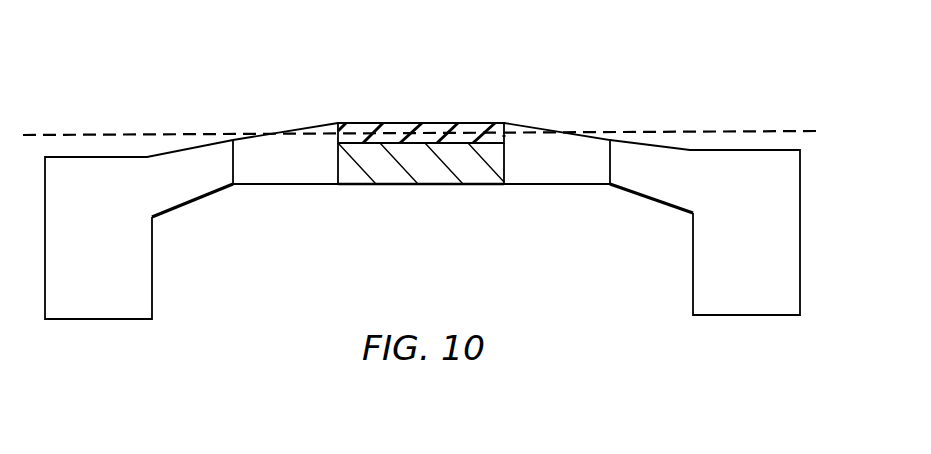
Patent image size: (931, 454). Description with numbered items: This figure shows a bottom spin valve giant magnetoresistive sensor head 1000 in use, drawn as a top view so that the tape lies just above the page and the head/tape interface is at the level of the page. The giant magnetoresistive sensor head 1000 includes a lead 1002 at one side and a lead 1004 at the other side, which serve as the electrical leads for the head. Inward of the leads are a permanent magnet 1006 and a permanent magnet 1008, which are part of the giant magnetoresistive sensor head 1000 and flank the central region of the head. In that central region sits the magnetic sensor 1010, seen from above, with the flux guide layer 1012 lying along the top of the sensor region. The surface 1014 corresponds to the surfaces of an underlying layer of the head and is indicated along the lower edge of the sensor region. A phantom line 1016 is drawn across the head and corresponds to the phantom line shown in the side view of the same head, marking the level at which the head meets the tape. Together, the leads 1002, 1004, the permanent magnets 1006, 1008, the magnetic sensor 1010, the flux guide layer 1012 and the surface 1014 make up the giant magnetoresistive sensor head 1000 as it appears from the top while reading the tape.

The giant magnetoresistive sensor head 1000 is at (162, 104).
The lead 1002 is at (98, 320).
The lead 1004 is at (748, 316).
The permanent magnet 1006 is at (285, 186).
The permanent magnet 1008 is at (557, 185).
The magnetic sensor 1010 is at (440, 193).
The flux guide layer 1012 is at (397, 122).
The surface 1014 is at (392, 185).
The phantom line 1016 is at (755, 130).